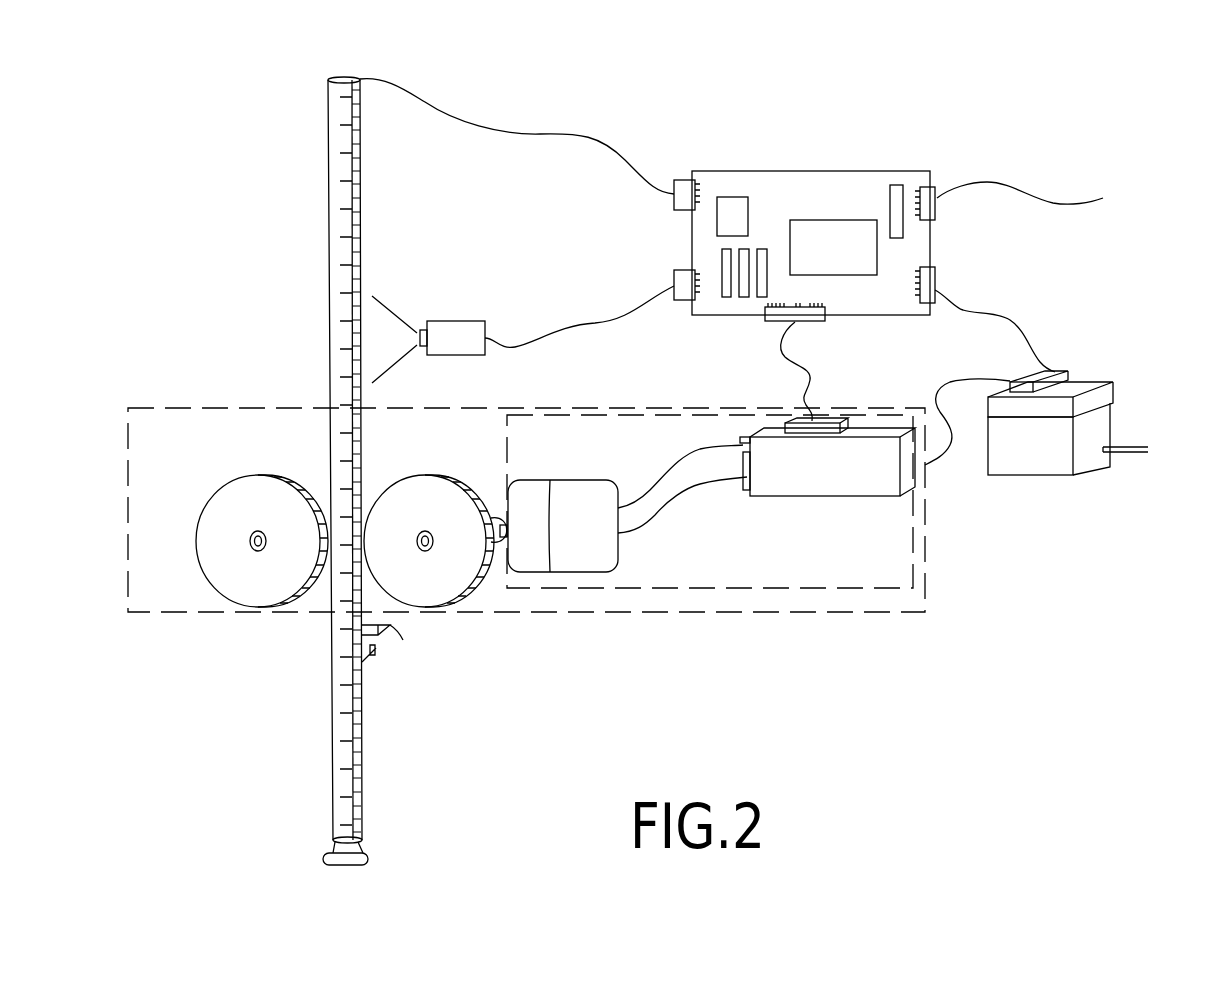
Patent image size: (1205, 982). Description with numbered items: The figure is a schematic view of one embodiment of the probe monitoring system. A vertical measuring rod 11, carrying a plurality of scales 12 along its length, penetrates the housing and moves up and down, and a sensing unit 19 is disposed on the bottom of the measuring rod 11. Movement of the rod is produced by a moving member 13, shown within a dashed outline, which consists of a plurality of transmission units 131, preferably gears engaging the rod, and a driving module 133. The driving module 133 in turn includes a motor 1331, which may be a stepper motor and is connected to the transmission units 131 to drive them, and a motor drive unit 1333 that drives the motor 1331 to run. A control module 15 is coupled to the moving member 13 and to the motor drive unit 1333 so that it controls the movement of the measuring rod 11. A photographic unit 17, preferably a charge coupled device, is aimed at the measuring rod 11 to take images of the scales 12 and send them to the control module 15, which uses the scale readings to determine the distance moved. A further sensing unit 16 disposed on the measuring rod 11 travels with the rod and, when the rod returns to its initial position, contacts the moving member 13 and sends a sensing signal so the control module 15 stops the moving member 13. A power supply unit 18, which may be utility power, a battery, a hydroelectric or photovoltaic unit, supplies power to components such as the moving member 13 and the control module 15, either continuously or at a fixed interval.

The measuring rod 11 is at (327, 253).
The scales 12 is at (347, 365).
The moving member 13 is at (925, 597).
The transmission units 131 is at (228, 480).
The driving module 133 is at (845, 590).
The motor 1331 is at (535, 478).
The motor drive unit 1333 is at (780, 497).
The control module 15 is at (803, 171).
The sensing unit 16 is at (390, 648).
The photographic unit 17 is at (450, 321).
The power supply unit 18 is at (1110, 427).
The sensing unit 19 is at (365, 858).